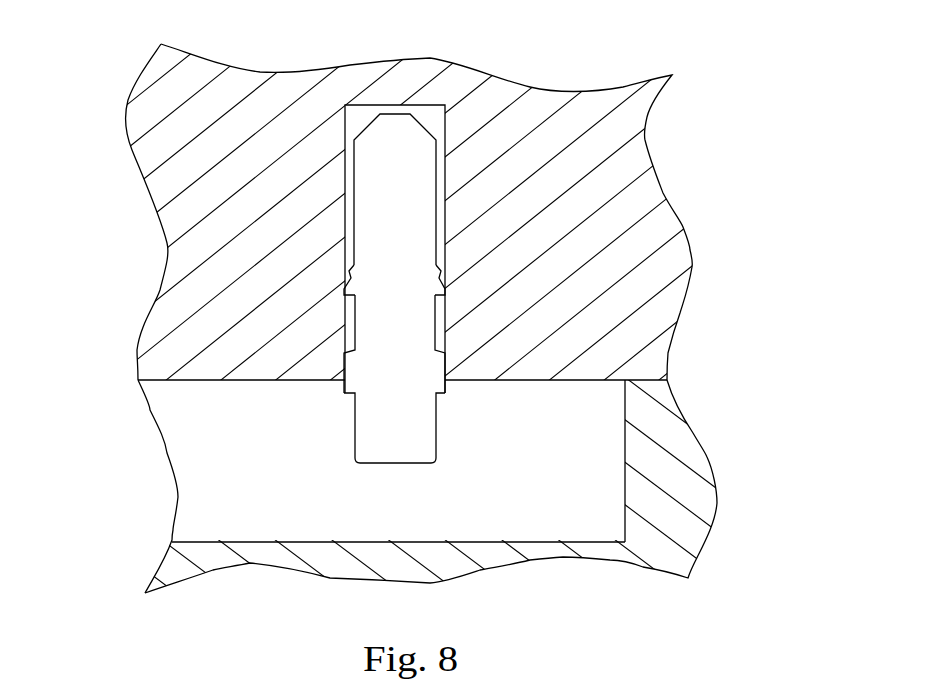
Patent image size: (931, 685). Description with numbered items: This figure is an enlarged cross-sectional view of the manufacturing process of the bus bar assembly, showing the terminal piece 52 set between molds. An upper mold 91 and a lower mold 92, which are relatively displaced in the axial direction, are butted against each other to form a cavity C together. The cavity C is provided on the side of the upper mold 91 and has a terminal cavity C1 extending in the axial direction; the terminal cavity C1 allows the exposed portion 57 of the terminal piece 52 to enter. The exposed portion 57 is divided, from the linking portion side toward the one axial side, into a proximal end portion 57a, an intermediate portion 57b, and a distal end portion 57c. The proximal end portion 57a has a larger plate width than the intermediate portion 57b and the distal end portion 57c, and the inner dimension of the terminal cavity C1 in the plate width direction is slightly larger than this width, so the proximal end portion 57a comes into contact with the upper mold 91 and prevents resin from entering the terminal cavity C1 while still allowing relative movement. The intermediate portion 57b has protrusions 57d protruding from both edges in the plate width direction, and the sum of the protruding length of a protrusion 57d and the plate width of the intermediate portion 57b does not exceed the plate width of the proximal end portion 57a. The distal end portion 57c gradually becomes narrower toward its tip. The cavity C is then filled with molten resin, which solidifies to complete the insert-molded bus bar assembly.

The upper mold 91 is at (645, 182).
The lower mold 92 is at (670, 443).
The cavity C is at (200, 415).
The terminal cavity C1 is at (352, 121).
The terminal piece 52 is at (413, 260).
The exposed portion 57 is at (413, 260).
The proximal end portion 57a is at (355, 390).
The intermediate portion 57b is at (412, 283).
The distal end portion 57c is at (400, 112).
The protrusion 57d is at (344, 290).